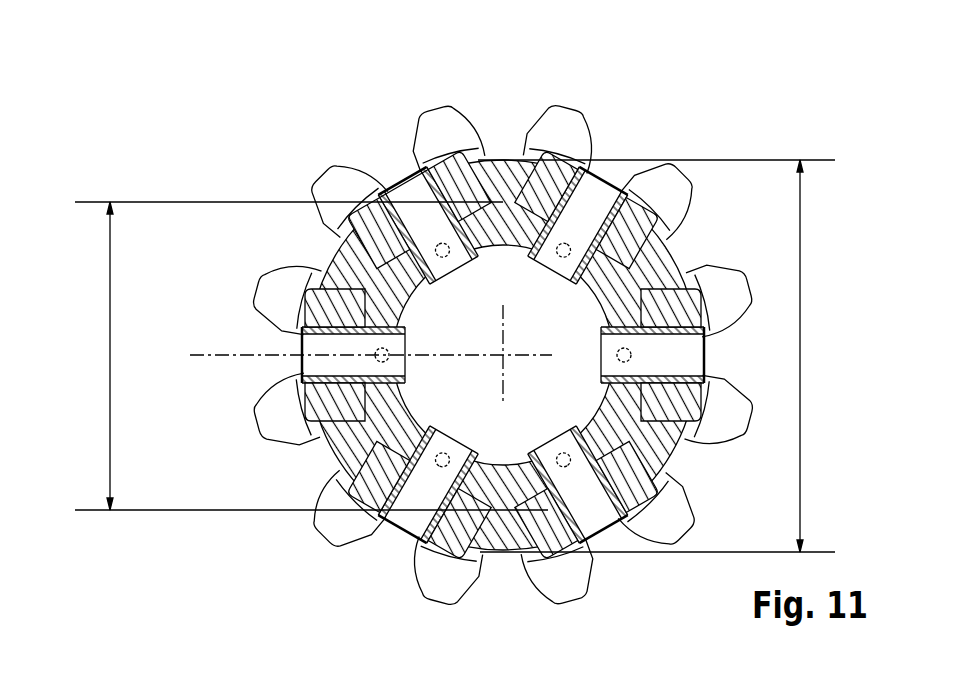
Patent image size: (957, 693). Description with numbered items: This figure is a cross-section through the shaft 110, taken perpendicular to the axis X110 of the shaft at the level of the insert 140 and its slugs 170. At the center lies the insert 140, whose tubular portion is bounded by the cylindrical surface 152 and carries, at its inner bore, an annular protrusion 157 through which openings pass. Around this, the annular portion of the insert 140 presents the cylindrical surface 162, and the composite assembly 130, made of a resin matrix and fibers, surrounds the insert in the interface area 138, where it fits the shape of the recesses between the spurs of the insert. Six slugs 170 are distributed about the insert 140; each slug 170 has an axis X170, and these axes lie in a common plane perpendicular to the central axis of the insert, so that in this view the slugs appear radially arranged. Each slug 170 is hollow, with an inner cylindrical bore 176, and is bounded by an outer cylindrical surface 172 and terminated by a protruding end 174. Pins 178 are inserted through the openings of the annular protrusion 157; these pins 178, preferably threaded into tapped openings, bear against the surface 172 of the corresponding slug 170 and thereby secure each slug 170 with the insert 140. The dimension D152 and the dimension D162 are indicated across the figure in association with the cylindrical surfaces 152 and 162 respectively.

The shaft 110 is at (748, 92).
The composite assembly 130 is at (632, 228).
The interface area 138 is at (735, 345).
The insert 140 is at (697, 487).
The cylindrical surface 152 is at (570, 593).
The annular protrusion 157 is at (437, 309).
The cylindrical surface 162 is at (494, 558).
The slug 170 is at (490, 48).
The outer cylindrical surface 172 is at (457, 186).
The protruding end 174 is at (368, 178).
The inner cylindrical bore 176 is at (430, 184).
The pin 178 is at (572, 240).
The axis X110 is at (497, 354).
The axis of slug X170 is at (338, 358).
The yoke diameter D152 is at (299, 356).
The outer diameter D162 is at (677, 356).